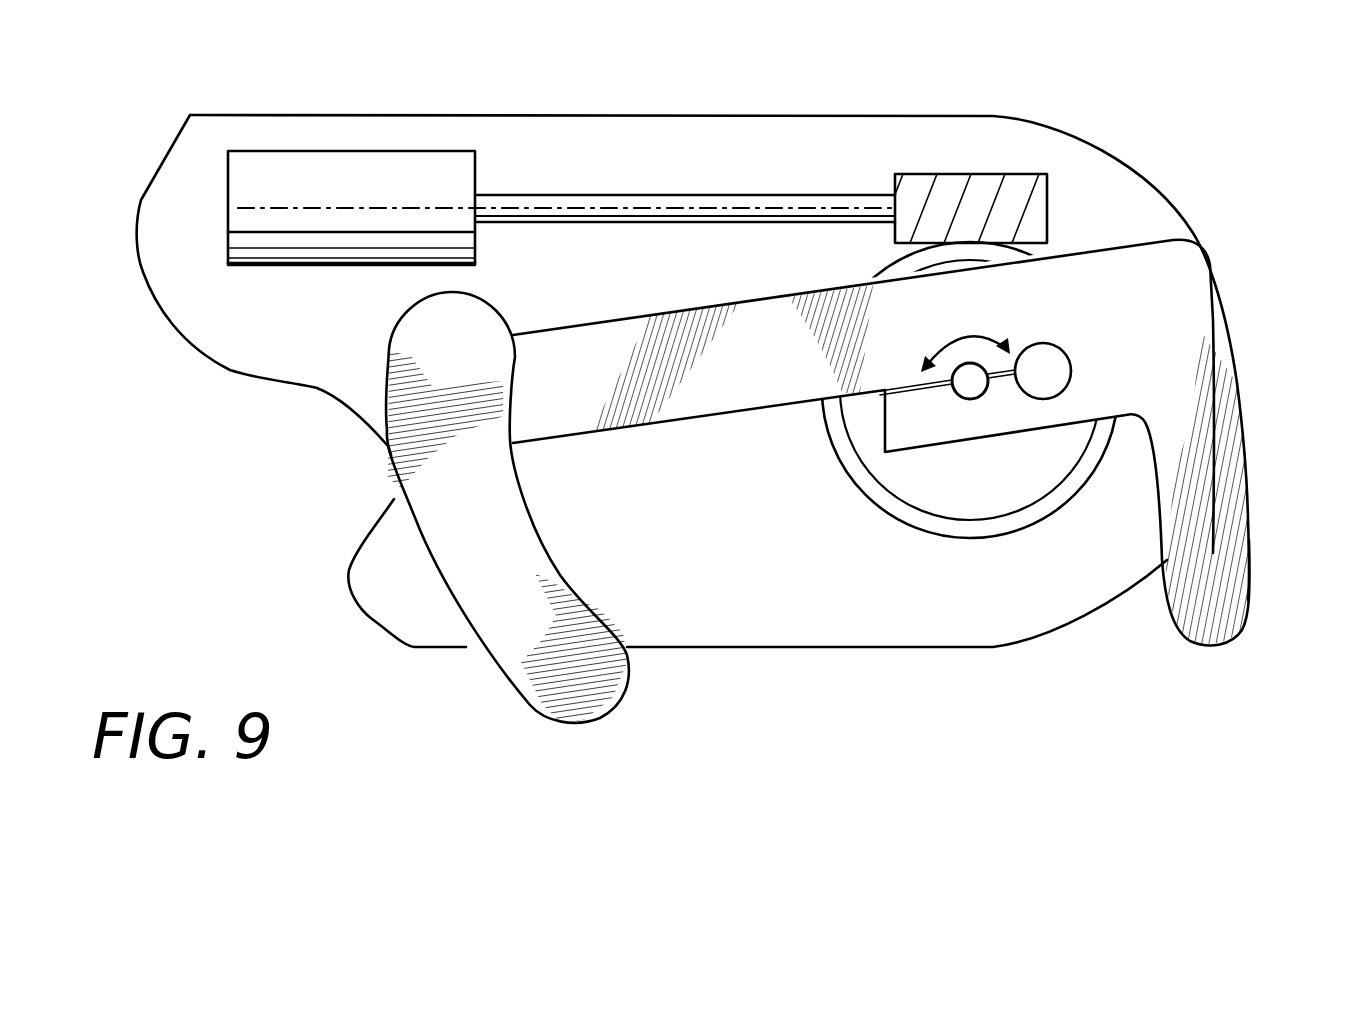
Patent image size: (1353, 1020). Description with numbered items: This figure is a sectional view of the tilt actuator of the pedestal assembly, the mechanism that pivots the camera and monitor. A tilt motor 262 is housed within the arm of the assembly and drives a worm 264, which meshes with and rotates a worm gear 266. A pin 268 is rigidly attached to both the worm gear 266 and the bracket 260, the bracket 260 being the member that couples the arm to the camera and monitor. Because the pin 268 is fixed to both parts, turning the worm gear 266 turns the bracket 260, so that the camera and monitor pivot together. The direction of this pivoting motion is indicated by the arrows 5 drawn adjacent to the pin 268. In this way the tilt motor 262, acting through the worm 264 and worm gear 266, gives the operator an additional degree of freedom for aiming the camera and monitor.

The bracket 260 is at (733, 381).
The tilt motor 262 is at (332, 172).
The worm 264 is at (970, 210).
The worm gear 266 is at (975, 490).
The pin 268 is at (978, 385).
The arrows 5 is at (965, 334).